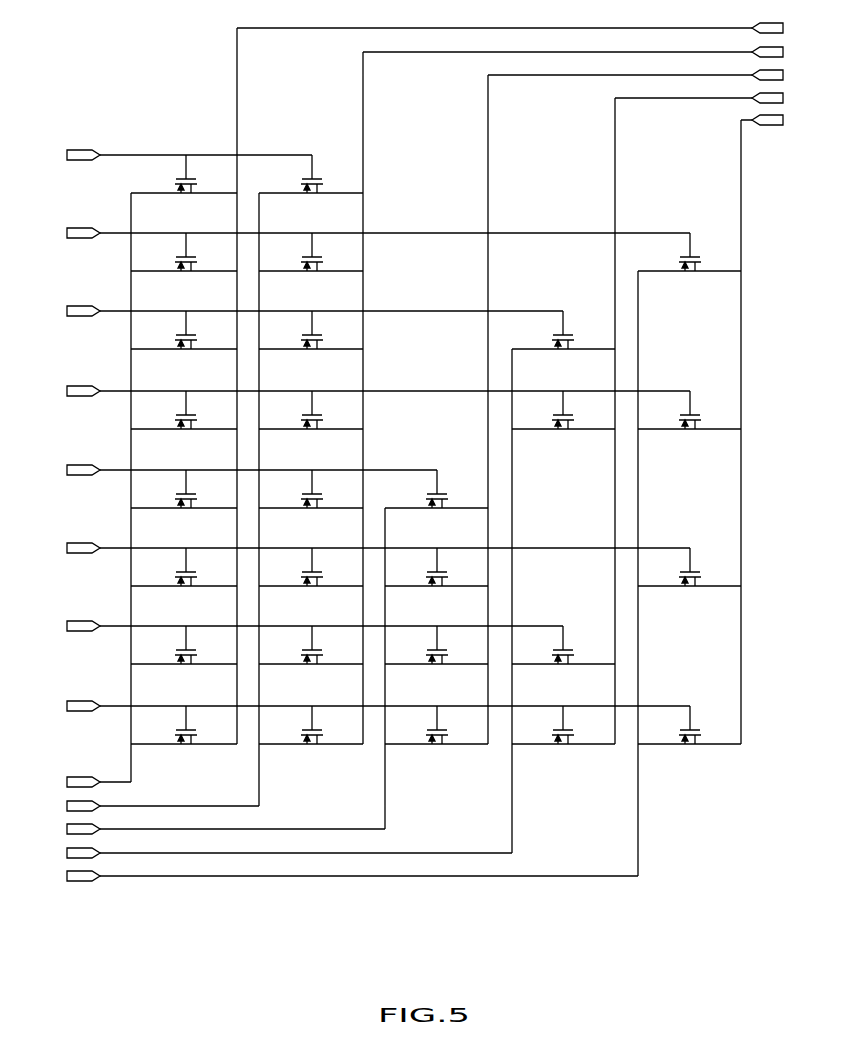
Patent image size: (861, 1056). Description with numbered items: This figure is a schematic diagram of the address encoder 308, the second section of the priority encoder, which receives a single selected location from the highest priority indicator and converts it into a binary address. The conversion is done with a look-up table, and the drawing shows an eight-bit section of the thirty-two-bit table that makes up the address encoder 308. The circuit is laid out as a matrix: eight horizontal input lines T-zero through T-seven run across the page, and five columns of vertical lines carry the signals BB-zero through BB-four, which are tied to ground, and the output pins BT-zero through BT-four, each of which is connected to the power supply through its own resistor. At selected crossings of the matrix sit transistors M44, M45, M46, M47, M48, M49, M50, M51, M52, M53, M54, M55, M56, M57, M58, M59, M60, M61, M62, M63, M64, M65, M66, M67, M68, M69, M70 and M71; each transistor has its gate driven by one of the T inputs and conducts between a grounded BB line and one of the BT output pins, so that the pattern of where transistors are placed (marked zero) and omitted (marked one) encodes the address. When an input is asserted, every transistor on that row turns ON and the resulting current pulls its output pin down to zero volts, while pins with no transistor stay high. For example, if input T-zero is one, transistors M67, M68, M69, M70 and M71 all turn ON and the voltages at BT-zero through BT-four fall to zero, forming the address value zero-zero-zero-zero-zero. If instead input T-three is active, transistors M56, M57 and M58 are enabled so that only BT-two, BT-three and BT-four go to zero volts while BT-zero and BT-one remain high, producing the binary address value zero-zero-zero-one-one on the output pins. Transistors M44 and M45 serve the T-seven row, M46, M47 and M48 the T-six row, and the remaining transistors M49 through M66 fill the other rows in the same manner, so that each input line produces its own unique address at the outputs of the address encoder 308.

The address encoder 308 is at (668, 858).
The transistor M44 is at (184, 188).
The transistor M45 is at (311, 188).
The transistor M46 is at (184, 266).
The transistor M47 is at (311, 266).
The transistor M48 is at (689, 266).
The transistor M49 is at (184, 344).
The transistor M50 is at (311, 344).
The transistor M51 is at (563, 344).
The transistor M52 is at (184, 424).
The transistor M53 is at (311, 424).
The transistor M54 is at (563, 424).
The transistor M55 is at (689, 424).
The transistor M56 is at (184, 503).
The transistor M57 is at (311, 503).
The transistor M58 is at (436, 503).
The transistor M59 is at (184, 581).
The transistor M60 is at (311, 581).
The transistor M61 is at (436, 581).
The transistor M62 is at (689, 581).
The transistor M63 is at (184, 659).
The transistor M64 is at (311, 659).
The transistor M65 is at (436, 659).
The transistor M66 is at (563, 659).
The transistor M67 is at (184, 739).
The transistor M68 is at (311, 739).
The transistor M69 is at (436, 739).
The transistor M70 is at (563, 739).
The transistor M71 is at (689, 739).